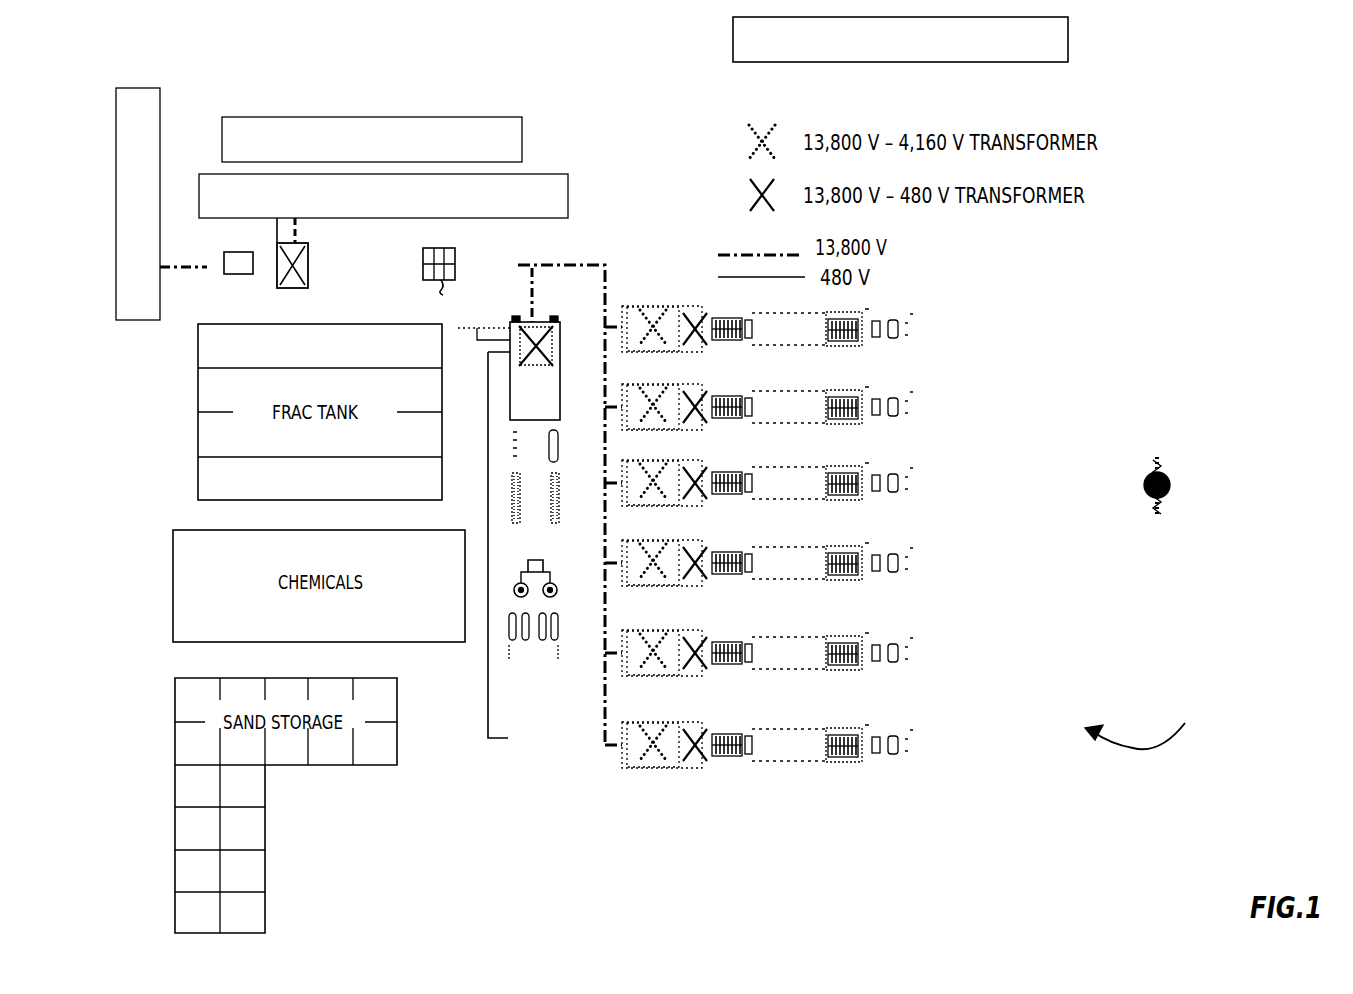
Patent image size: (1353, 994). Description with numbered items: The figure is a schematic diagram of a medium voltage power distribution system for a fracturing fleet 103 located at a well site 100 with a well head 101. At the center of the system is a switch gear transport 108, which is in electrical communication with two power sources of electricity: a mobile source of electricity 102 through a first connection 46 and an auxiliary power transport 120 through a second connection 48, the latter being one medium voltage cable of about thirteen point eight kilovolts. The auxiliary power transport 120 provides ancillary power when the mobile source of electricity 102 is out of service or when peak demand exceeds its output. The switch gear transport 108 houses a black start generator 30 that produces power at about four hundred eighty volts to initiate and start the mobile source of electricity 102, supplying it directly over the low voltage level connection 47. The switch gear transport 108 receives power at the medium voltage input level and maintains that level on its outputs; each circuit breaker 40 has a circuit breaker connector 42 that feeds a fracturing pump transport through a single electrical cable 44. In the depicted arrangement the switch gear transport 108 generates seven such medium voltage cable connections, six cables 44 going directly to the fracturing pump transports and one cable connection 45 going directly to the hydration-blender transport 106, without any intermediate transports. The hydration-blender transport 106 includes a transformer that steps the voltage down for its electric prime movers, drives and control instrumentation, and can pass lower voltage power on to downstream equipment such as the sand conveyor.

The well site 100 is at (1221, 342).
The well head 101 is at (1255, 517).
The mobile source of electricity 102 is at (577, 217).
The fracturing fleet 103 is at (1139, 718).
The hydration-blender transport 106 is at (544, 462).
The switch gear transport 108 is at (391, 275).
The auxiliary power transport 120 is at (148, 128).
The black start generator 30 is at (239, 274).
The circuit breaker 40 is at (423, 264).
The circuit breaker connector 42 is at (446, 301).
The electrical cable connection 44 is at (570, 487).
The cable connection 45 is at (547, 295).
The first connection 46 is at (313, 231).
The low voltage level connection 47 is at (261, 231).
The second connection 48 is at (183, 255).